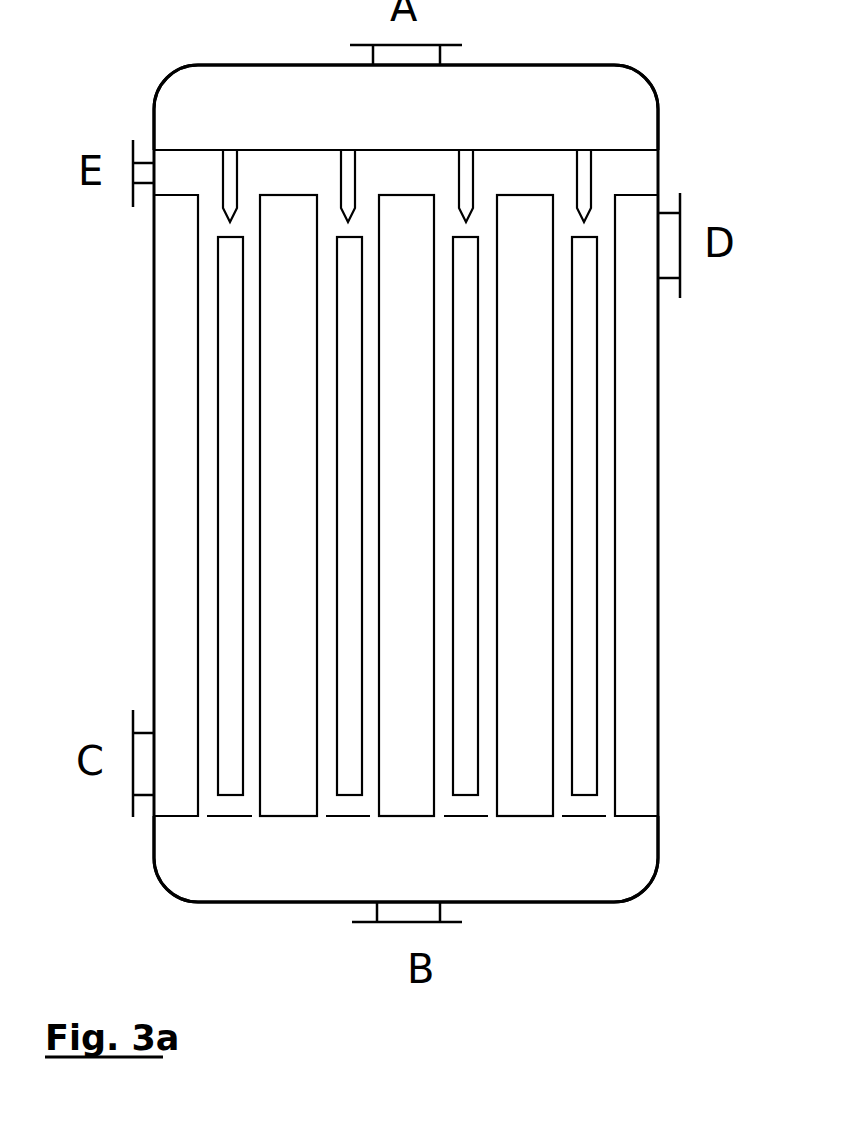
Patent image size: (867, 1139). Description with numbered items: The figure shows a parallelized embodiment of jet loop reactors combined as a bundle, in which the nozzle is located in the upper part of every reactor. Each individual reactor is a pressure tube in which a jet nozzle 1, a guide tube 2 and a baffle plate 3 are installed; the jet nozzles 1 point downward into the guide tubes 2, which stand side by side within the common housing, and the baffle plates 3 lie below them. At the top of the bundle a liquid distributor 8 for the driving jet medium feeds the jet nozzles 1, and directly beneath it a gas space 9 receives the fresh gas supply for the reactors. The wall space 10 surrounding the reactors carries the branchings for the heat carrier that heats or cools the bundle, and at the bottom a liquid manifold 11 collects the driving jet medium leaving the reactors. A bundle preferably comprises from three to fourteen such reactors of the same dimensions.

The jet nozzle 1 is at (230, 215).
The guide tube 2 is at (218, 302).
The baffle plate 3 is at (217, 817).
The liquid distributor for driving jet medium 8 is at (627, 107).
The gas space for fresh gas supply 9 is at (627, 170).
The wall space for branchings for heat carrier 10 is at (627, 492).
The liquid manifold for driving jet medium 11 is at (627, 857).